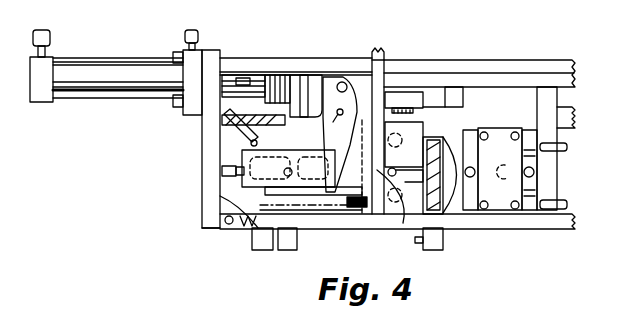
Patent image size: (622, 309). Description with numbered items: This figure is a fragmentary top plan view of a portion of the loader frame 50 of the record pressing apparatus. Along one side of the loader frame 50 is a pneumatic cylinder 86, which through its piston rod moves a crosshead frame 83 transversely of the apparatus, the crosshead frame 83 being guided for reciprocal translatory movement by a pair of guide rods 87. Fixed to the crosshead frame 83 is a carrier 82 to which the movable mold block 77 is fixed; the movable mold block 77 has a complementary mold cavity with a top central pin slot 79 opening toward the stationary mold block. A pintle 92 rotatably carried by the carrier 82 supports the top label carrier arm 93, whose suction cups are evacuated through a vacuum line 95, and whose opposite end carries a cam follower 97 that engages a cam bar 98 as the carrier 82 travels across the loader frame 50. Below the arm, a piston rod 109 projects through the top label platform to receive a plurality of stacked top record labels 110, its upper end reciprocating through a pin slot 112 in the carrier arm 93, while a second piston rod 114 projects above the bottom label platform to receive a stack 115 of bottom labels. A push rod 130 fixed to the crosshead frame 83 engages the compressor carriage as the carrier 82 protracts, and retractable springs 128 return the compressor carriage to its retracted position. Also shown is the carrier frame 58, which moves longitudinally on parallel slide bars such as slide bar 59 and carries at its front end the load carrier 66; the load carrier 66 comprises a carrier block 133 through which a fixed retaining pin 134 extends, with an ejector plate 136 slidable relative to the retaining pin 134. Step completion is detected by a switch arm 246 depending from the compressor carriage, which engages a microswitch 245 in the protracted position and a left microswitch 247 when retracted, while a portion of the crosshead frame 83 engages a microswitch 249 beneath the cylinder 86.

The loader frame 50 is at (199, 205).
The carrier frame 58 is at (537, 228).
The slide bar 59 is at (385, 54).
The load carrier 66 is at (507, 118).
The movable mold block 77 is at (413, 127).
The top central pin slot 79 is at (403, 222).
The carrier 82 is at (307, 108).
The crosshead frame 83 is at (275, 82).
The pneumatic cylinder 86 is at (125, 80).
The guide rod 87 is at (206, 100).
The pintle 92 is at (330, 128).
The top label carrier arm 93 is at (220, 196).
The vacuum line 95 is at (217, 149).
The cam follower 97 is at (339, 78).
The cam bar 98 is at (361, 78).
The piston rod 109 is at (268, 190).
The top record labels 110 is at (201, 224).
The pin slot 112 is at (288, 177).
The piston rod 114 is at (367, 222).
The stack of bottom labels 115 is at (446, 196).
The retractable springs 128 is at (238, 228).
The push rod 130 is at (403, 97).
The carrier block 133 is at (558, 108).
The retaining pin 134 is at (513, 158).
The ejector plate 136 is at (547, 172).
The microswitch 245 is at (430, 241).
The switch arm 246 is at (289, 250).
The left microswitch 247 is at (252, 244).
The microswitch 249 is at (225, 63).